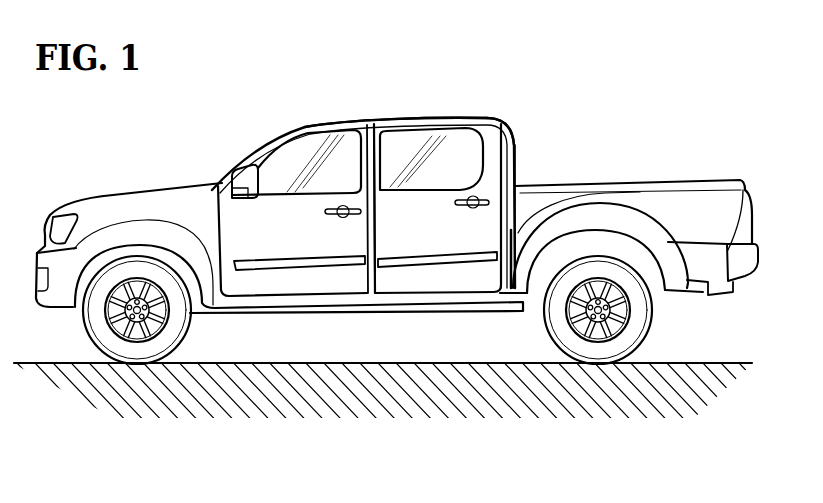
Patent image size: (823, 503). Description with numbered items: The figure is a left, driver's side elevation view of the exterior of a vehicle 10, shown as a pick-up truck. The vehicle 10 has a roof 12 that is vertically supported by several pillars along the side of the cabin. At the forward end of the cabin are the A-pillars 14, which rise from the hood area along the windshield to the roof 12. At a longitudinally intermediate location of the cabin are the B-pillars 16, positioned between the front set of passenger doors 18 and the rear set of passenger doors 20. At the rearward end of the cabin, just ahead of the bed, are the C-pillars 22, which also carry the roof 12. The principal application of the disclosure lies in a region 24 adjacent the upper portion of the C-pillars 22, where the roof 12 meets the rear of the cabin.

The vehicle 10 is at (620, 107).
The roof 12 is at (441, 117).
The A-pillars 14 is at (257, 162).
The B-pillars 16 is at (378, 152).
The front passenger doors 18 is at (295, 285).
The rear passenger doors 20 is at (447, 280).
The C-pillars 22 is at (503, 148).
The region 24 is at (505, 121).